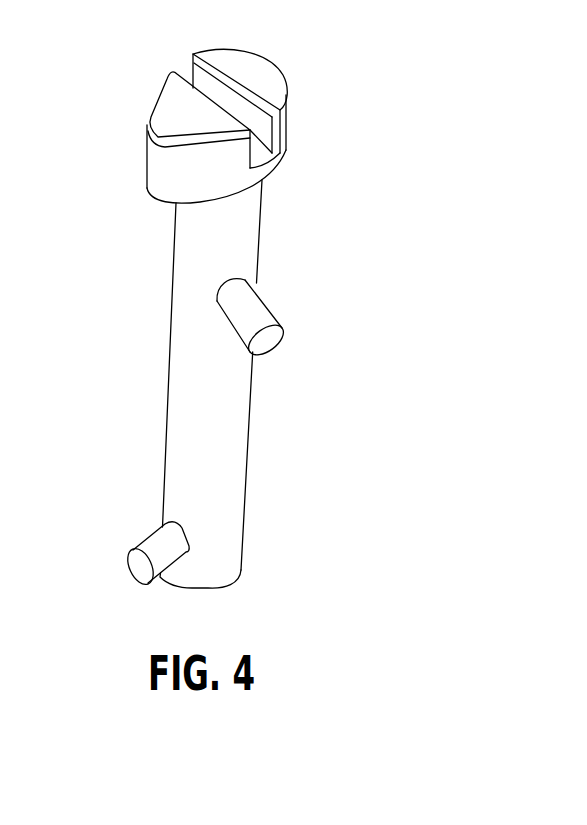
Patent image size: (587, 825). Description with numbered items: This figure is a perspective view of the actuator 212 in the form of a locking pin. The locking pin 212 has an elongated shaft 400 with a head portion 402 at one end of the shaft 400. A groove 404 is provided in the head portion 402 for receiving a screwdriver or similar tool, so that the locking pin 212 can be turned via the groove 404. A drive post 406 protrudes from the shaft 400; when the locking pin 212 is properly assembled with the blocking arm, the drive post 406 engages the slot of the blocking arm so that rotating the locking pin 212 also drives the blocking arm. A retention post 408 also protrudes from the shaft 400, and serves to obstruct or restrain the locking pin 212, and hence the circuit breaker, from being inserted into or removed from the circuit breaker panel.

The actuator 212 is at (367, 150).
The elongated shaft 400 is at (258, 250).
The head portion 402 is at (172, 115).
The groove 404 is at (180, 57).
The drive post 406 is at (218, 280).
The retention post 408 is at (156, 530).